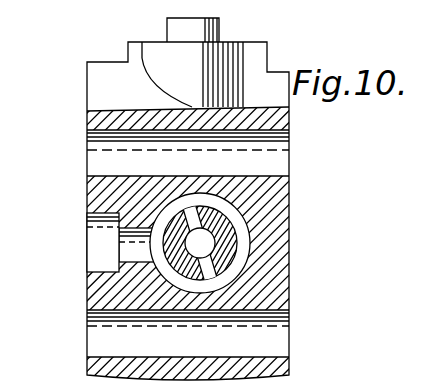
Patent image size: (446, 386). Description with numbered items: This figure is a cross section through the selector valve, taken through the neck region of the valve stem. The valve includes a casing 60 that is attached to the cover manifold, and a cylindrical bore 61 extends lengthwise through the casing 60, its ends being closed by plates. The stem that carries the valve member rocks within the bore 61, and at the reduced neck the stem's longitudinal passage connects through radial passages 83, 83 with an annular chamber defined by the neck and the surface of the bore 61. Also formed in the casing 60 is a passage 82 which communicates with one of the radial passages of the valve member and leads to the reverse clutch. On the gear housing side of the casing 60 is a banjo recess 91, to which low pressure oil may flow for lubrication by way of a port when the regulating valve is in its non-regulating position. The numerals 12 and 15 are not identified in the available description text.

The casing 60 is at (86, 120).
The cylindrical bore 61 is at (246, 267).
The cylinder ring 12 is at (234, 208).
The shaft 15 is at (214, 236).
The passage 82 is at (228, 274).
The radial passages 83 is at (194, 209).
The banjo recess 91 is at (87, 222).